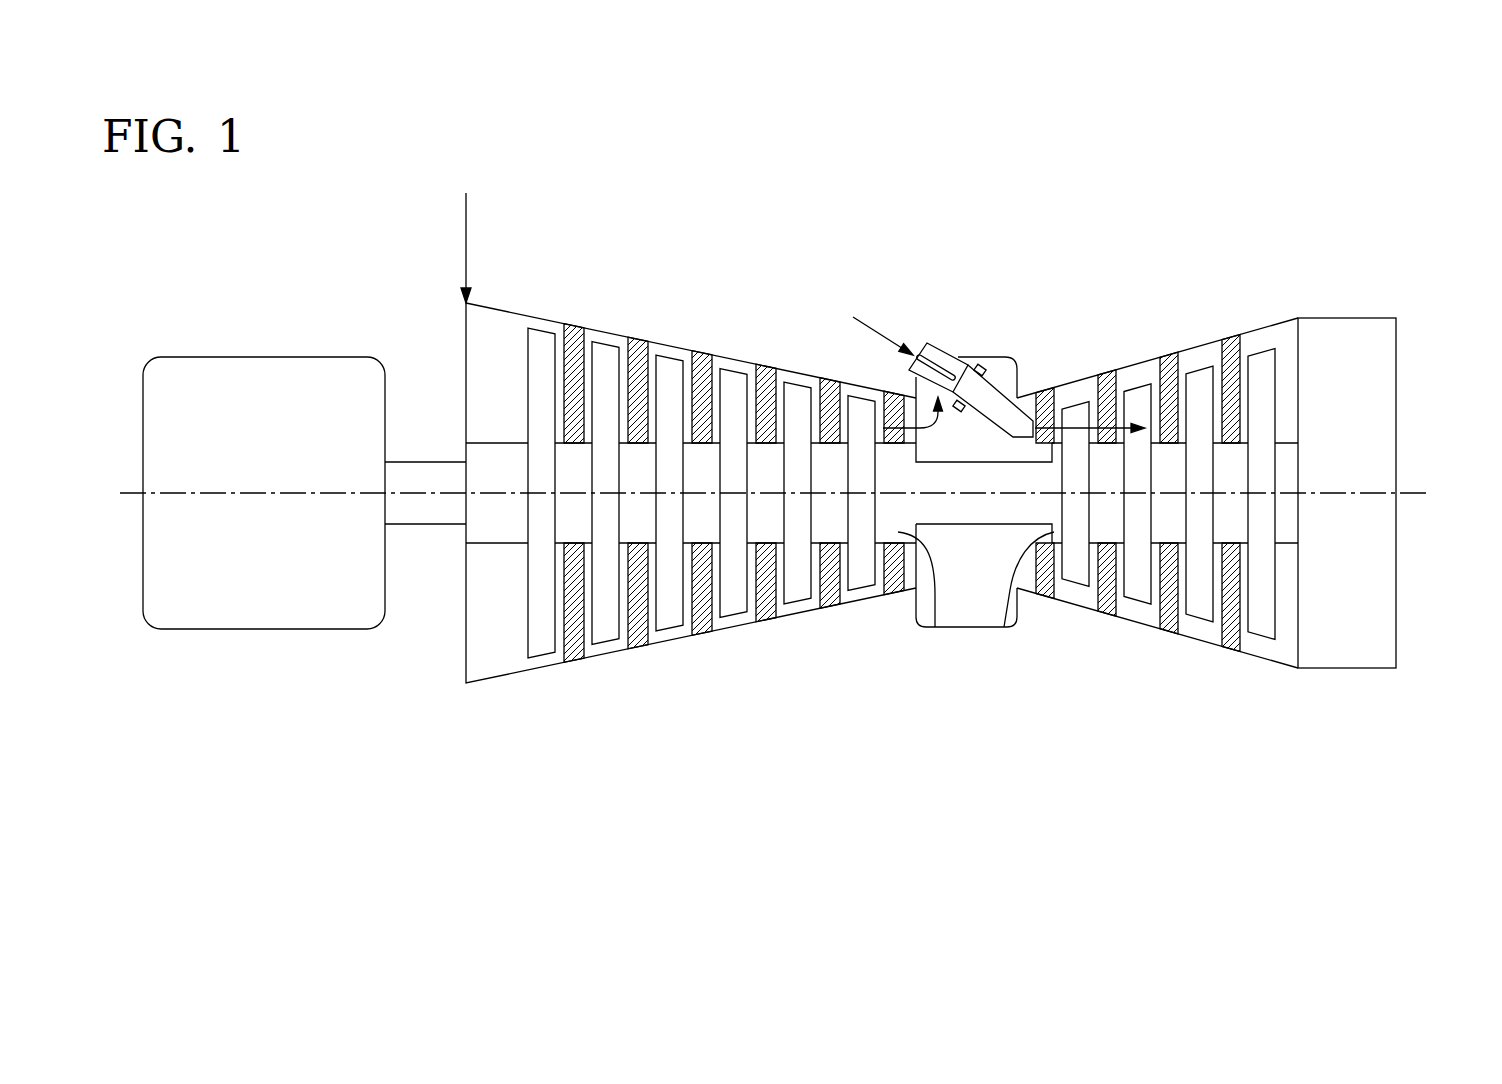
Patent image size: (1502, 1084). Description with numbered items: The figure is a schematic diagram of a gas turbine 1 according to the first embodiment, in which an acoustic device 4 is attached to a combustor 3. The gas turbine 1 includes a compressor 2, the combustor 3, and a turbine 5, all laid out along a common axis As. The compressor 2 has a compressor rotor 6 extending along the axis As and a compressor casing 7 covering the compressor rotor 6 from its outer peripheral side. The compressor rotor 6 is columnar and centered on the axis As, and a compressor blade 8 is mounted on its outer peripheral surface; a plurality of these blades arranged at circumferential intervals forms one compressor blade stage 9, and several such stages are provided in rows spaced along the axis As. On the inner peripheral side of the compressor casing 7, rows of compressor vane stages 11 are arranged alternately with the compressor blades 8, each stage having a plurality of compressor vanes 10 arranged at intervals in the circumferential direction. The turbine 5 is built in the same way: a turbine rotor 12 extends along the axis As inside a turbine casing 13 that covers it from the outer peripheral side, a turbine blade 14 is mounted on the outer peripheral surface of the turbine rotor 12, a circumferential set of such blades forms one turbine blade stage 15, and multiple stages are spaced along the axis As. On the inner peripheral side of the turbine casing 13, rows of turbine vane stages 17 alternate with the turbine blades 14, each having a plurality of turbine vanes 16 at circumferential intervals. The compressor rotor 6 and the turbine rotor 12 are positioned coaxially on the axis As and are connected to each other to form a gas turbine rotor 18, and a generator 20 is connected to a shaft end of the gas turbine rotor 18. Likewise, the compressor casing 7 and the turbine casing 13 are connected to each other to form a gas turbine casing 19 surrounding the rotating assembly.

The gas turbine 1 is at (1338, 198).
The compressor 2 is at (648, 300).
The combustor 3 is at (958, 335).
The acoustic device 4 is at (981, 364).
The turbine 5 is at (1172, 304).
The compressor rotor 6 is at (935, 627).
The compressor casing 7 is at (735, 360).
The compressor blade 8 is at (540, 336).
The compressor blade stage 9 is at (698, 445).
The compressor vane 10 is at (638, 623).
The compressor vane stage 11 is at (734, 544).
The turbine rotor 12 is at (1020, 610).
The turbine casing 13 is at (1133, 363).
The turbine blade 14 is at (1202, 382).
The turbine blade stage 15 is at (1172, 426).
The turbine vane 16 is at (1165, 615).
The turbine vane stage 17 is at (1143, 544).
The gas turbine rotor 18 is at (999, 498).
The gas turbine casing 19 is at (928, 479).
The generator 20 is at (273, 357).
The axis As is at (1417, 492).